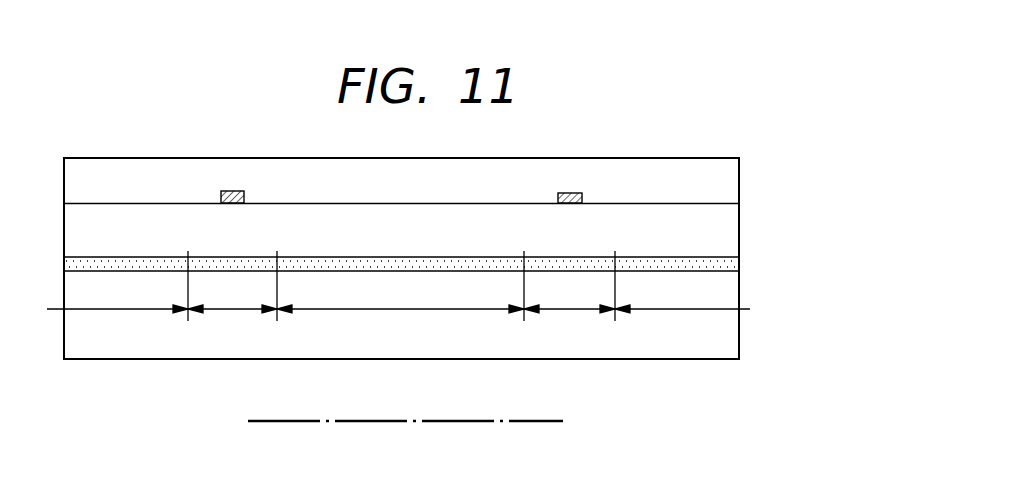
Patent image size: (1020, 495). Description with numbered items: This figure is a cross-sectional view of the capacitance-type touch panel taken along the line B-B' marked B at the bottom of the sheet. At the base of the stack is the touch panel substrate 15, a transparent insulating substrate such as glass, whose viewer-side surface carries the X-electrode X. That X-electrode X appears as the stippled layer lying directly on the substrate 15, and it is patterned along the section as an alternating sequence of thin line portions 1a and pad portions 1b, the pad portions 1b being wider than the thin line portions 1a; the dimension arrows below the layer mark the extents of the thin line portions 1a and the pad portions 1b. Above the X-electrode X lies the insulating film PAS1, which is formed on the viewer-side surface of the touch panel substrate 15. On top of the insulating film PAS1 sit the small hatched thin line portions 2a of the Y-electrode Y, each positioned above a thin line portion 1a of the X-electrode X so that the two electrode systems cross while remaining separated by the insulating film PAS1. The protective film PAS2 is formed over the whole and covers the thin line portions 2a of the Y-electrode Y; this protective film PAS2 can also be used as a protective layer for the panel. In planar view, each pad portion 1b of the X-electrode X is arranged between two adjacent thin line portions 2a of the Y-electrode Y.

The touch panel substrate 15 is at (728, 341).
The protective film PAS2 is at (728, 182).
The insulating film PAS1 is at (728, 230).
The X-electrode X is at (728, 266).
The Y-electrode Y is at (409, 155).
The thin line portion 2a is at (568, 192).
The thin line portion 1a is at (401, 299).
The pad portion 1b is at (401, 299).
The line B-B' B is at (408, 421).